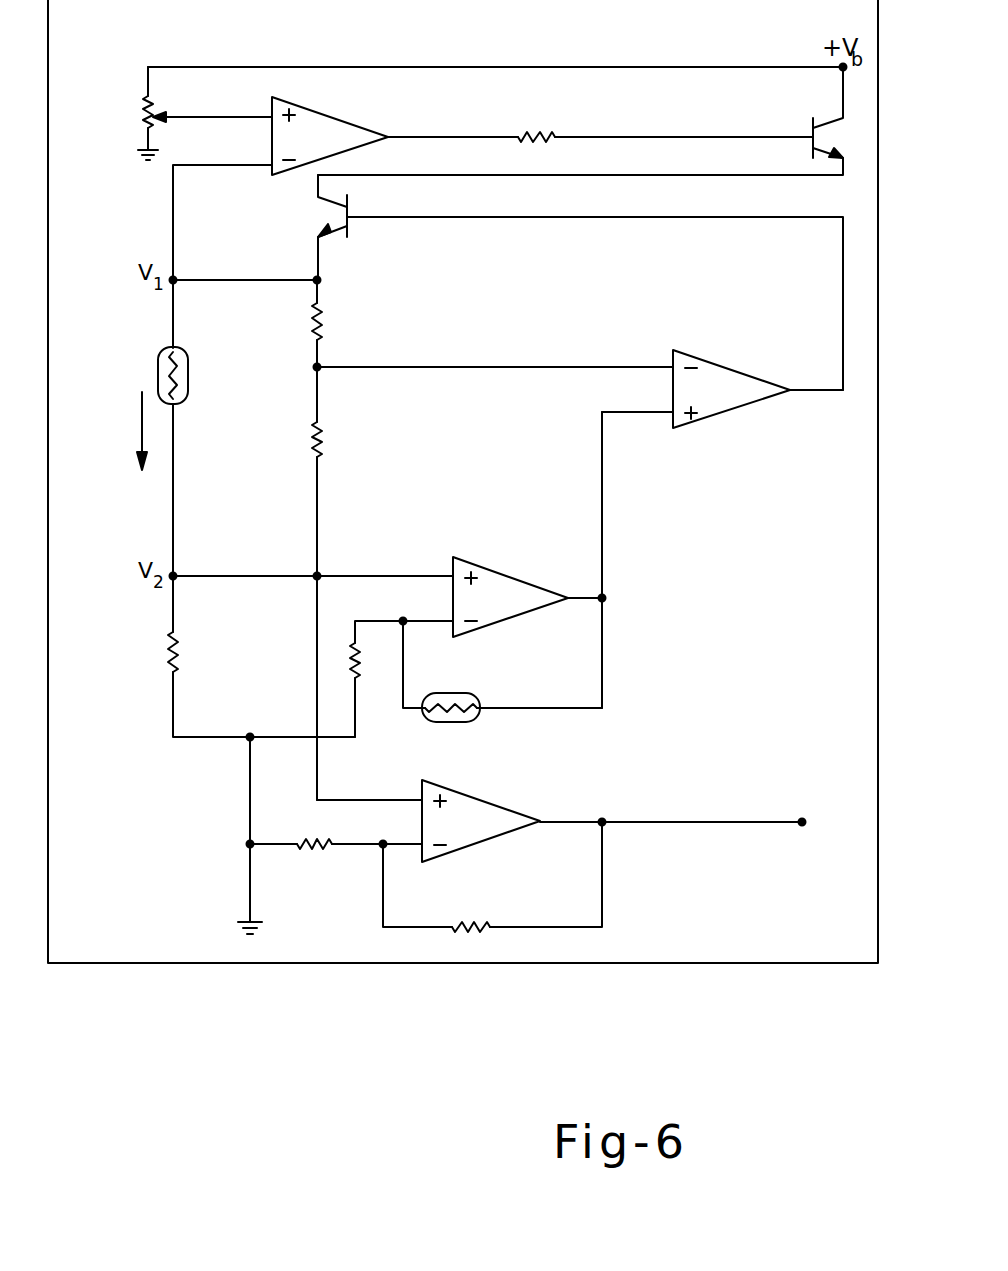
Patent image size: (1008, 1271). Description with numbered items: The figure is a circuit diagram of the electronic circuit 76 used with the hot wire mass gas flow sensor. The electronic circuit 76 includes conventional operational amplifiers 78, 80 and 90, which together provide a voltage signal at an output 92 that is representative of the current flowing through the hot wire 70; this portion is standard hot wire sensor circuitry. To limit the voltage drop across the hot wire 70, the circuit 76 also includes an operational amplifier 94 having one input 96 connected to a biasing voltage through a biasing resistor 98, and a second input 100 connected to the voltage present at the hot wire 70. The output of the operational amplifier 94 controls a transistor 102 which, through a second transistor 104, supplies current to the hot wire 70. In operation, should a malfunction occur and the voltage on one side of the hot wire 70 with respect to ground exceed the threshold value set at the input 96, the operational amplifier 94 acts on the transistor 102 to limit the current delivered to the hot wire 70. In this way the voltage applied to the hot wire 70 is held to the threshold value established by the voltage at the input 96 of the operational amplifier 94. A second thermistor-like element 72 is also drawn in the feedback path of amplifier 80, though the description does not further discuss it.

The hot wire 70 is at (187, 370).
The thermistor 72 is at (445, 716).
The electronic circuit 76 is at (352, 998).
The operational amplifier 78 is at (750, 370).
The operational amplifier 80 is at (481, 566).
The operational amplifier 90 is at (463, 848).
The output 92 is at (737, 822).
The operational amplifier 94 is at (340, 118).
The input 96 is at (240, 118).
The biasing resistor 98 is at (135, 110).
The second input 100 is at (213, 166).
The transistor 102 is at (833, 122).
The second transistor 104 is at (352, 220).